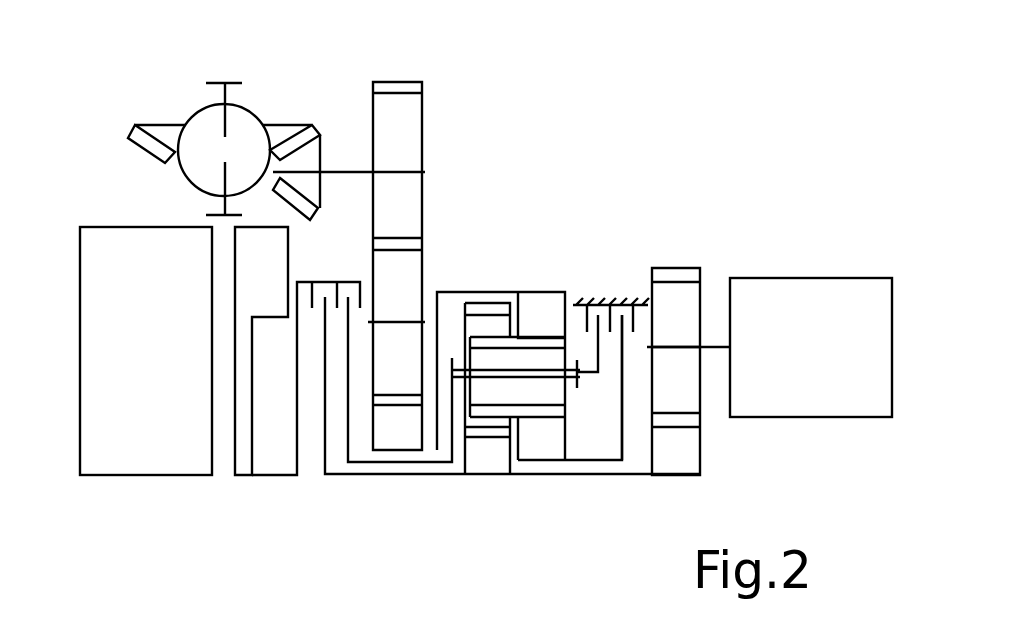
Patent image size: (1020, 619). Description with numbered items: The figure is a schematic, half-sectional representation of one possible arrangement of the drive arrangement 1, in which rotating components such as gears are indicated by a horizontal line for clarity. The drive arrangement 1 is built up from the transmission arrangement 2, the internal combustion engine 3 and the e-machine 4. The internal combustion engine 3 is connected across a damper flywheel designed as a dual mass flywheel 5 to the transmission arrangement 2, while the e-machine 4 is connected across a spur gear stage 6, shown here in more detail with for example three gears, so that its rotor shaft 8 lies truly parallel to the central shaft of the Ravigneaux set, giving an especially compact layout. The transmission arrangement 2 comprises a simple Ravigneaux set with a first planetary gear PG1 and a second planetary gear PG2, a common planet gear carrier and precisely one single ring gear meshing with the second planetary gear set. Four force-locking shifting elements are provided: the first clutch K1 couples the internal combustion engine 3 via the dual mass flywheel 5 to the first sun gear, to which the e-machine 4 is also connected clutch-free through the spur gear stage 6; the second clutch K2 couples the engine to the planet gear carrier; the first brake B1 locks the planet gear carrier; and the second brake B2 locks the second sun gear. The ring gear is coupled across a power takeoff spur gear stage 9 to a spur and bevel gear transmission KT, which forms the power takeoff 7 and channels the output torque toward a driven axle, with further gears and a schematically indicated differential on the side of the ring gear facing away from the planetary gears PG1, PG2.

The drive arrangement 1 is at (690, 136).
The transmission arrangement 2 is at (280, 496).
The internal combustion engine 3 is at (100, 240).
The e-machine 4 is at (822, 298).
The dual mass flywheel 5 is at (265, 248).
The spur gear stage 6 is at (663, 492).
The power takeoff 7 is at (250, 135).
The rotor shaft 8 is at (713, 346).
The power takeoff spur gear stage 9 is at (397, 138).
The spur and bevel gear transmission KT is at (317, 104).
The first clutch K1 is at (391, 359).
The second clutch K2 is at (501, 365).
The first brake B1 is at (623, 365).
The second brake B2 is at (611, 321).
The first planetary gear PG1 is at (543, 486).
The second planetary gear PG2 is at (473, 486).